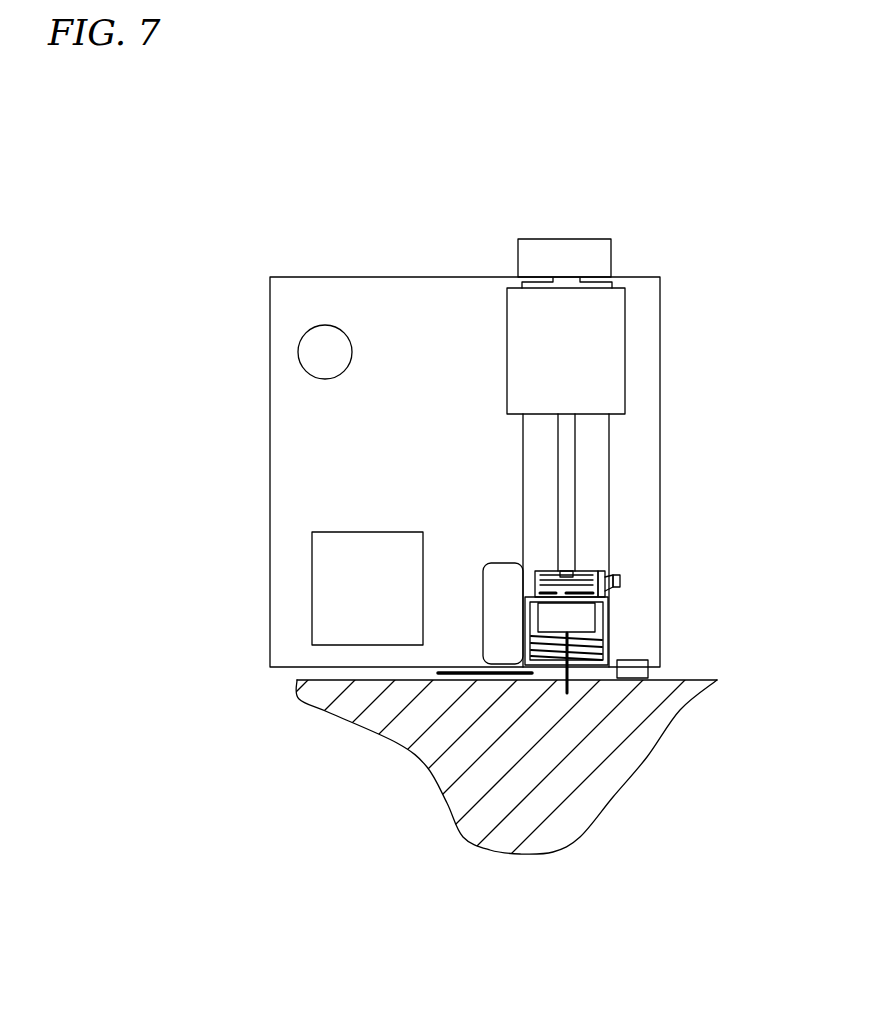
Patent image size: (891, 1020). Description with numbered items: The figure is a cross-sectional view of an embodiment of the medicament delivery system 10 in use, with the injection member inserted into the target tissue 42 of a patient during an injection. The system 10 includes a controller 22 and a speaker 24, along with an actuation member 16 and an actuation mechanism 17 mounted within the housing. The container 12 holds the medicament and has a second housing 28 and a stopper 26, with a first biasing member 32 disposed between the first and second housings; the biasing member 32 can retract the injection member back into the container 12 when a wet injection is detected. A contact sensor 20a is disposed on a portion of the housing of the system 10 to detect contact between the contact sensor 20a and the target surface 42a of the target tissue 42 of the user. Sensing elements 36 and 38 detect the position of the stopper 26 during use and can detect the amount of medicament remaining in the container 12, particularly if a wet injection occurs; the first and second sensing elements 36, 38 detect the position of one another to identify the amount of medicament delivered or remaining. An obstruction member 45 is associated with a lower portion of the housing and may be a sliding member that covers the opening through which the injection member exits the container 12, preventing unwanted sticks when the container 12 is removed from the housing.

The system 10 is at (418, 124).
The actuation member 16 is at (612, 258).
The actuation mechanism 17 is at (625, 358).
The speaker 24 is at (300, 337).
The controller 22 is at (312, 562).
The second housing 28 is at (600, 573).
The stopper 26 is at (593, 591).
The first sensing element 36 is at (621, 582).
The first biasing member 32 is at (600, 645).
The obstruction member 45 is at (545, 612).
The second sensing element 38 is at (563, 598).
The contact sensor 20a is at (648, 673).
The target tissue 42 is at (483, 615).
The target surface 42a is at (330, 676).
The container 12 is at (410, 720).